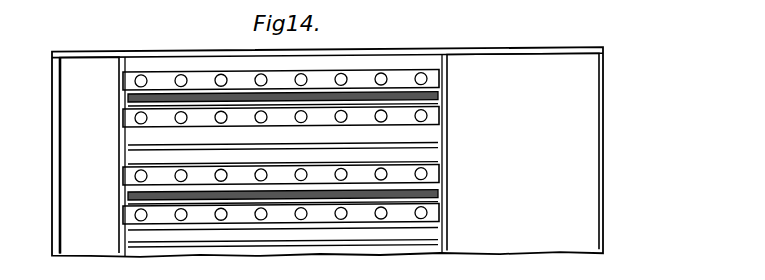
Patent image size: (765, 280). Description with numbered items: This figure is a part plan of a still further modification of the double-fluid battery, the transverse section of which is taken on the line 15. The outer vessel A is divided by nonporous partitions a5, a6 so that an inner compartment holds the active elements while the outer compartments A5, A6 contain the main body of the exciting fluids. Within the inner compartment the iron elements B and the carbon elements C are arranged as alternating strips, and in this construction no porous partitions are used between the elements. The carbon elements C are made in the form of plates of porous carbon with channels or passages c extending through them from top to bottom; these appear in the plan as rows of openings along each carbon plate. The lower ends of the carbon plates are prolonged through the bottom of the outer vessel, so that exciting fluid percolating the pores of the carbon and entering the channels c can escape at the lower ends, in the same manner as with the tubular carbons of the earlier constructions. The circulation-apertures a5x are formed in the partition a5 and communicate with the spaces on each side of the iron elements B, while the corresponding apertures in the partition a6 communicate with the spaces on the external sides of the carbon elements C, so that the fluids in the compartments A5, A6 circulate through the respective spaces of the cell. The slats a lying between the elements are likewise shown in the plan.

The outer vessel A is at (325, 149).
The section line 15- 15 is at (72, 119).
The outer compartment A5 is at (89, 155).
The outer compartment A6 is at (523, 151).
The slat a is at (283, 191).
The nonporous partition a5 is at (125, 240).
The nonporous partition a6 is at (443, 246).
The circulation-apertures a5x is at (455, 227).
The iron element B is at (440, 92).
The carbon element C is at (134, 81).
The channels or passages c is at (181, 77).